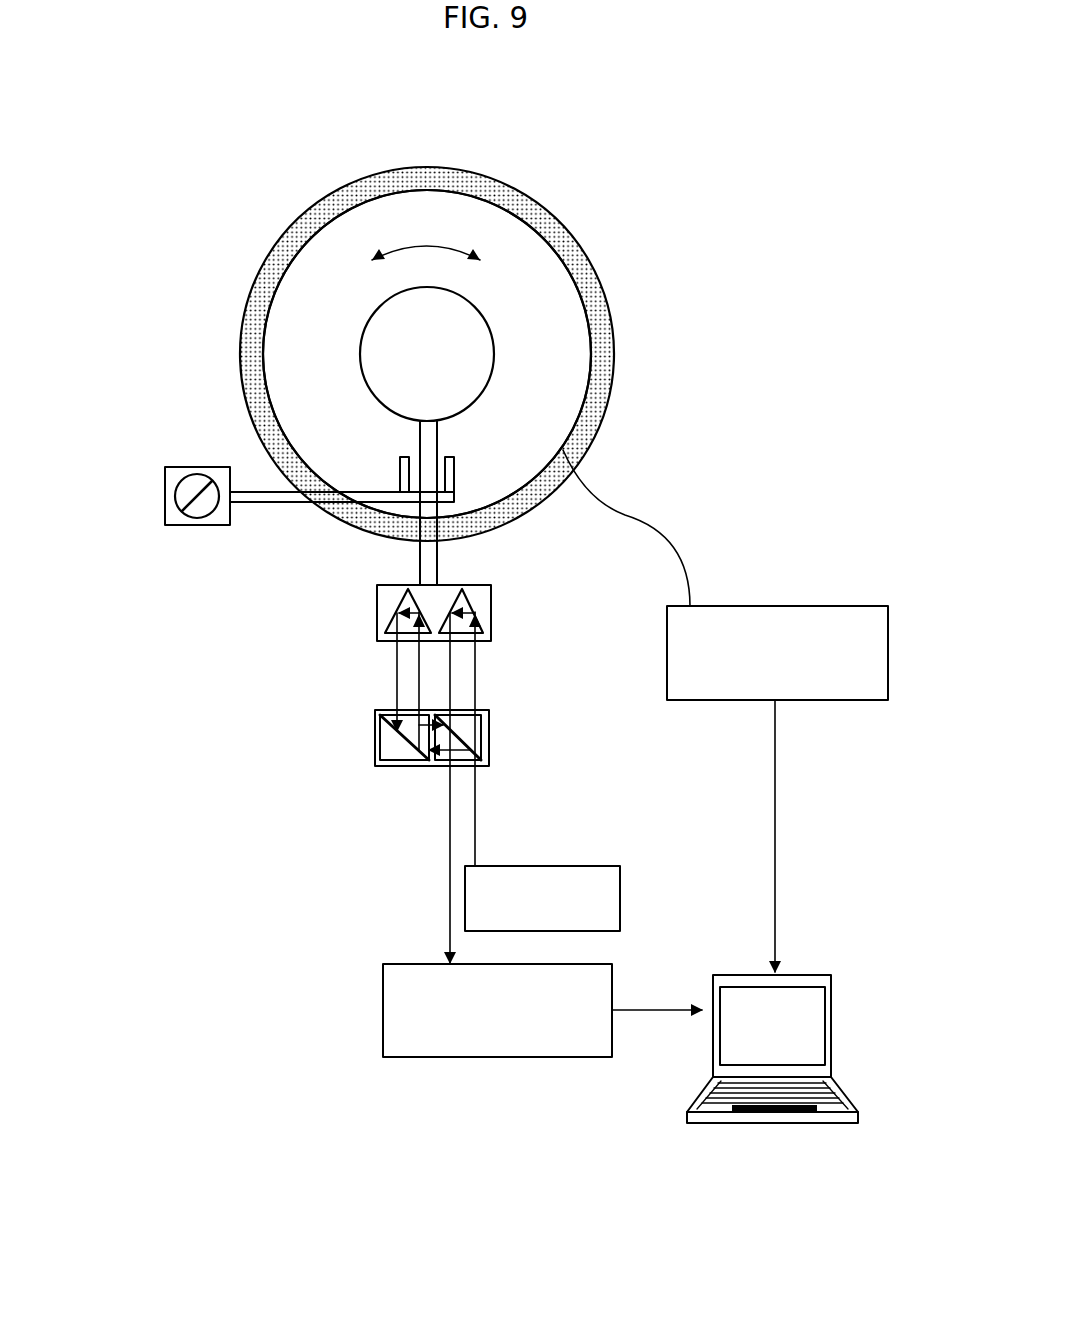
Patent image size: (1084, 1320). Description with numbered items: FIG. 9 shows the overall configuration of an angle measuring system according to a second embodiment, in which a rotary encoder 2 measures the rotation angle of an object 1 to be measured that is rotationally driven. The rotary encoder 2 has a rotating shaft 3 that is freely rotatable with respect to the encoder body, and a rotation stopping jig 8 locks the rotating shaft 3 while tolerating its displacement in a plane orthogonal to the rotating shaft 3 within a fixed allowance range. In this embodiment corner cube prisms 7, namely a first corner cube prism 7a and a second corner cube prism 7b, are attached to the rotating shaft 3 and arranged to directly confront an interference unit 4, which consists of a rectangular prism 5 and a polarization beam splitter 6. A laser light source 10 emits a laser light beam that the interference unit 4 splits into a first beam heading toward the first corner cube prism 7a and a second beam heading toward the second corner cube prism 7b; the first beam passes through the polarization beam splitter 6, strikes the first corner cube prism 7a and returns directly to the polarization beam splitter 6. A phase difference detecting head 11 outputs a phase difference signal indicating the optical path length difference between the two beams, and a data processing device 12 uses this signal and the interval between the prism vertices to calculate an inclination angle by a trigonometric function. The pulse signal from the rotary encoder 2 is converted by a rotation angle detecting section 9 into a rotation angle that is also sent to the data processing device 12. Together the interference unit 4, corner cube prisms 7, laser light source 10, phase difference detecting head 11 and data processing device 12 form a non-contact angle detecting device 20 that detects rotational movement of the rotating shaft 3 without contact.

The object to be measured 1 is at (332, 198).
The rotary encoder 2 is at (540, 307).
The rotating shaft 3 is at (470, 313).
The interference unit 4 is at (337, 801).
The rectangular prism 5 is at (395, 739).
The polarization beam splitter 6 is at (444, 778).
The corner cube prisms 7 is at (290, 649).
The first corner cube prism 7a is at (443, 633).
The second corner cube prism 7b is at (398, 605).
The rotation stopping jig 8 is at (192, 525).
The rotation angle detecting section 9 is at (825, 606).
The laser light source 10 is at (568, 866).
The phase difference detecting head 11 is at (613, 980).
The data processing device 12 is at (730, 1123).
The non-contact angle detecting device 20 is at (328, 1092).